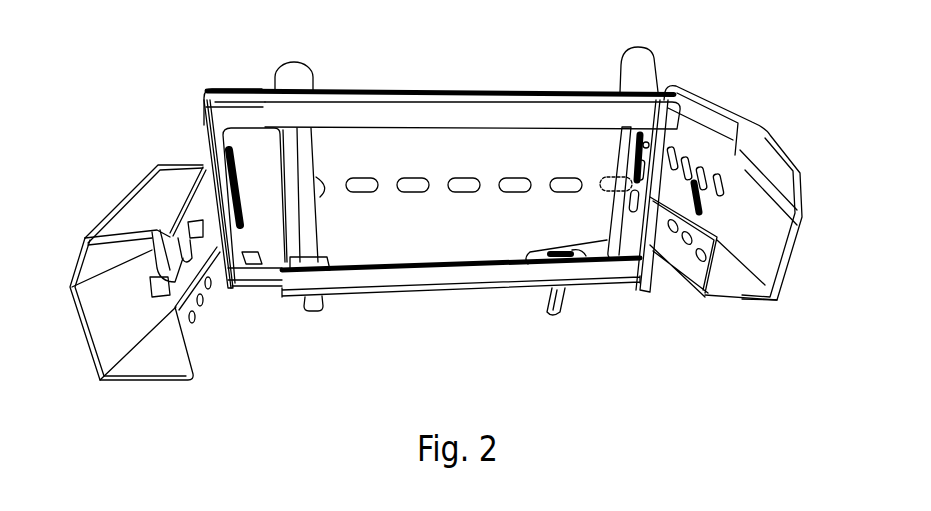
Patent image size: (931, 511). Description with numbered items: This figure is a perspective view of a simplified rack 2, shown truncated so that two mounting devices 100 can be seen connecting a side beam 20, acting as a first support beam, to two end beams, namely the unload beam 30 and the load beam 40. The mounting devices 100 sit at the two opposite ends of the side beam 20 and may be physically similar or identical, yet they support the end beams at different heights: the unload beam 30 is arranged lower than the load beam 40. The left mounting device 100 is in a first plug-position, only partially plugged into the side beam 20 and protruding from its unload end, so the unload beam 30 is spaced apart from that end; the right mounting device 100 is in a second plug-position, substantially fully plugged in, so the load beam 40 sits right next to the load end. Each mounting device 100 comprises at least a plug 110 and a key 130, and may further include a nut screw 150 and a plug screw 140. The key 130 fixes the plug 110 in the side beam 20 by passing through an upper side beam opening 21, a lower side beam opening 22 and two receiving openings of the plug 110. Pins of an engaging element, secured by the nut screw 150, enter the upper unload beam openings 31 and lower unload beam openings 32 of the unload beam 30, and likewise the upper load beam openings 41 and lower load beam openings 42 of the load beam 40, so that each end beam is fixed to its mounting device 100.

The rack 2 is at (457, 43).
The side beam 20 is at (453, 138).
The upper side beam opening 21 is at (353, 91).
The lower side beam opening 22 is at (358, 296).
The unload beam 30 is at (132, 207).
The upper unload beam opening 31 is at (201, 218).
The lower unload beam opening 32 is at (193, 323).
The load beam 40 is at (714, 124).
The upper load beam opening 41 is at (720, 183).
The lower load beam opening 42 is at (702, 257).
The mounting device 100 is at (243, 113).
The plug 110 is at (204, 133).
The key 130 is at (293, 70).
The plug screw 140 is at (556, 304).
The nut screw 150 is at (243, 217).